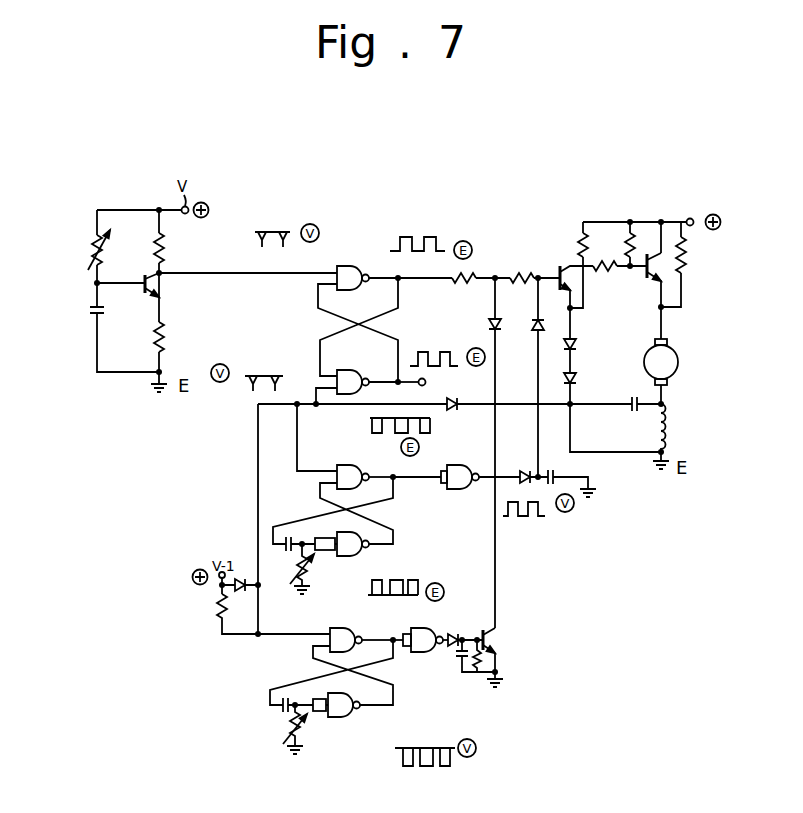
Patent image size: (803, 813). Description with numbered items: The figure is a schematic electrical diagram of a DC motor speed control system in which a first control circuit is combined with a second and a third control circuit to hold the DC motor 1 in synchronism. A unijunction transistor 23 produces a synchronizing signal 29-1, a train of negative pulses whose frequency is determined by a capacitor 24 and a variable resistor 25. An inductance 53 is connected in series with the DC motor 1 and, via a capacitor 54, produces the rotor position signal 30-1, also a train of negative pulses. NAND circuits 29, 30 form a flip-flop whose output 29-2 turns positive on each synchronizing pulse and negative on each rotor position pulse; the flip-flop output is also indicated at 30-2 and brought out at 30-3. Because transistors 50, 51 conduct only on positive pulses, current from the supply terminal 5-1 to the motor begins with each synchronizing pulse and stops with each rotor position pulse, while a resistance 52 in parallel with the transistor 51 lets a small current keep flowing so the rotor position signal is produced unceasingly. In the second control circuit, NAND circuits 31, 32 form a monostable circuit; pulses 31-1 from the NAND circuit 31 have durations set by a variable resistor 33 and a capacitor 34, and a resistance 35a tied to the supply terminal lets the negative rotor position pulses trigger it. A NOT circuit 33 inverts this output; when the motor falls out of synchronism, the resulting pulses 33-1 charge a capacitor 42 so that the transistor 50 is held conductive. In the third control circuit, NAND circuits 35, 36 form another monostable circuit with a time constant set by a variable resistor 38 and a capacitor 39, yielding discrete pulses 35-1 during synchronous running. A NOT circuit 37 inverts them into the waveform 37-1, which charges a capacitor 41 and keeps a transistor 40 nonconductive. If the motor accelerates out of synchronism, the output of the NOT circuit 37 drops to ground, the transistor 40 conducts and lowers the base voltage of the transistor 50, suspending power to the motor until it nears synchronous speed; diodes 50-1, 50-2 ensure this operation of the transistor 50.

The DC motor 1 is at (678, 367).
The power supply terminal 5-1 is at (688, 218).
The unijunction transistor 23 is at (145, 292).
The capacitor 24 is at (90, 311).
The variable resistor 25 is at (97, 245).
The NAND circuit 29 is at (351, 258).
The synchronizing signal 29-1 is at (265, 230).
The output waveform of NAND circuit 29 29-2 is at (412, 233).
The NAND circuit 30 is at (357, 374).
The rotor position signal 30-1 is at (268, 366).
The output waveform 30-2 is at (418, 350).
The output terminal 30-3 is at (426, 382).
The NAND circuit 31 is at (347, 466).
The output pulses of NAND circuit 31 31-1 is at (420, 416).
The NAND circuit 32 is at (340, 556).
The variable resistor / NOT circuit 33 is at (306, 592).
The output of NOT circuit 33 33-1 is at (540, 518).
The capacitor 34 is at (282, 549).
The NAND circuit 35 is at (345, 628).
The output pulses of NAND circuit 35 35-1 is at (409, 579).
The resistance 35a is at (218, 609).
The NAND circuit 36 is at (347, 718).
The NOT circuit 37 is at (426, 628).
The output waveform of NOT circuit 37 37-1 is at (442, 768).
The variable resistor 38 is at (299, 737).
The capacitor 39 is at (280, 714).
The transistor 40 is at (490, 632).
The capacitor 41 is at (456, 655).
The capacitor 42 is at (551, 470).
The transistor 50 is at (566, 283).
The diode 50-1 is at (574, 345).
The diode 50-2 is at (574, 379).
The transistor 51 is at (664, 285).
The resistance 52 is at (683, 258).
The inductance 53 is at (667, 427).
The capacitor 54 is at (633, 411).